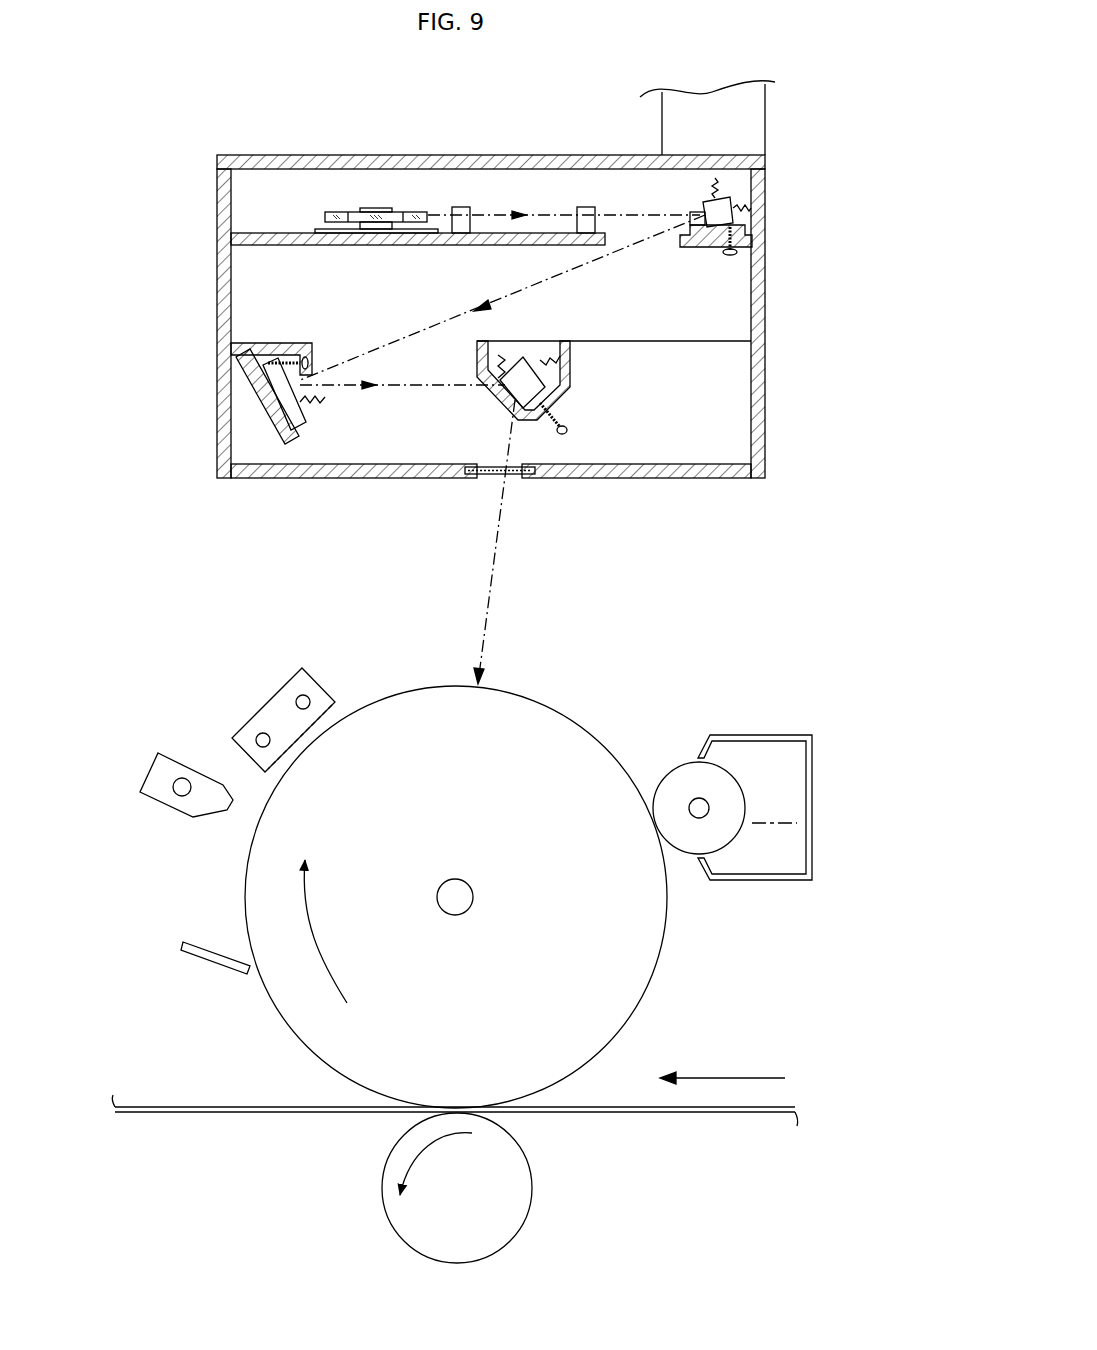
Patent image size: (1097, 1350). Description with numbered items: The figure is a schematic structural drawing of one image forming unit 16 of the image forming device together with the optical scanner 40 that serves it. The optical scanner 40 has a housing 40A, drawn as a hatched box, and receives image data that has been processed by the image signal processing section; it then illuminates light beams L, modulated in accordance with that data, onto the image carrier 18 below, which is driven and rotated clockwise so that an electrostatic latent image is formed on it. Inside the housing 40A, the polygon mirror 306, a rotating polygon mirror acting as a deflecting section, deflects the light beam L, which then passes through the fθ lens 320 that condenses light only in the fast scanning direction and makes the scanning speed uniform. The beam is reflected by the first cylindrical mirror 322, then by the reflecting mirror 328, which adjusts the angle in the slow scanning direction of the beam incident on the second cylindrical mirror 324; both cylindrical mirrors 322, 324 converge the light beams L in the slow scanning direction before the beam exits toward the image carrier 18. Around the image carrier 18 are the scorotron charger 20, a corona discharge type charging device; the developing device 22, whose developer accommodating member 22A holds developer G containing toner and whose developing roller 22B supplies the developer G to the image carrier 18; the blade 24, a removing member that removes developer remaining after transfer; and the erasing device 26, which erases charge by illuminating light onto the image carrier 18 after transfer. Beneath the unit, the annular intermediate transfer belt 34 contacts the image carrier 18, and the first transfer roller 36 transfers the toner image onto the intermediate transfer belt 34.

The image forming unit 16 is at (85, 432).
The image carrier 18 is at (666, 955).
The scorotron charger 20 is at (262, 706).
The developing device 22 is at (822, 672).
The developer accommodating member 22A is at (790, 735).
The developing roller 22B is at (725, 765).
The blade 24 is at (221, 968).
The erasing device 26 is at (150, 770).
The intermediate transfer belt 34 is at (198, 1115).
The first transfer roller 36 is at (533, 1192).
The optical scanner 40 is at (798, 189).
The housing 40A is at (765, 353).
The polygon mirror 306 is at (344, 204).
The fθ lens 320 is at (603, 203).
The first cylindrical mirror 322 is at (698, 204).
The second cylindrical mirror 324 is at (548, 380).
The reflecting mirror 328 is at (312, 382).
The light beam L is at (492, 588).
The developer G is at (790, 823).